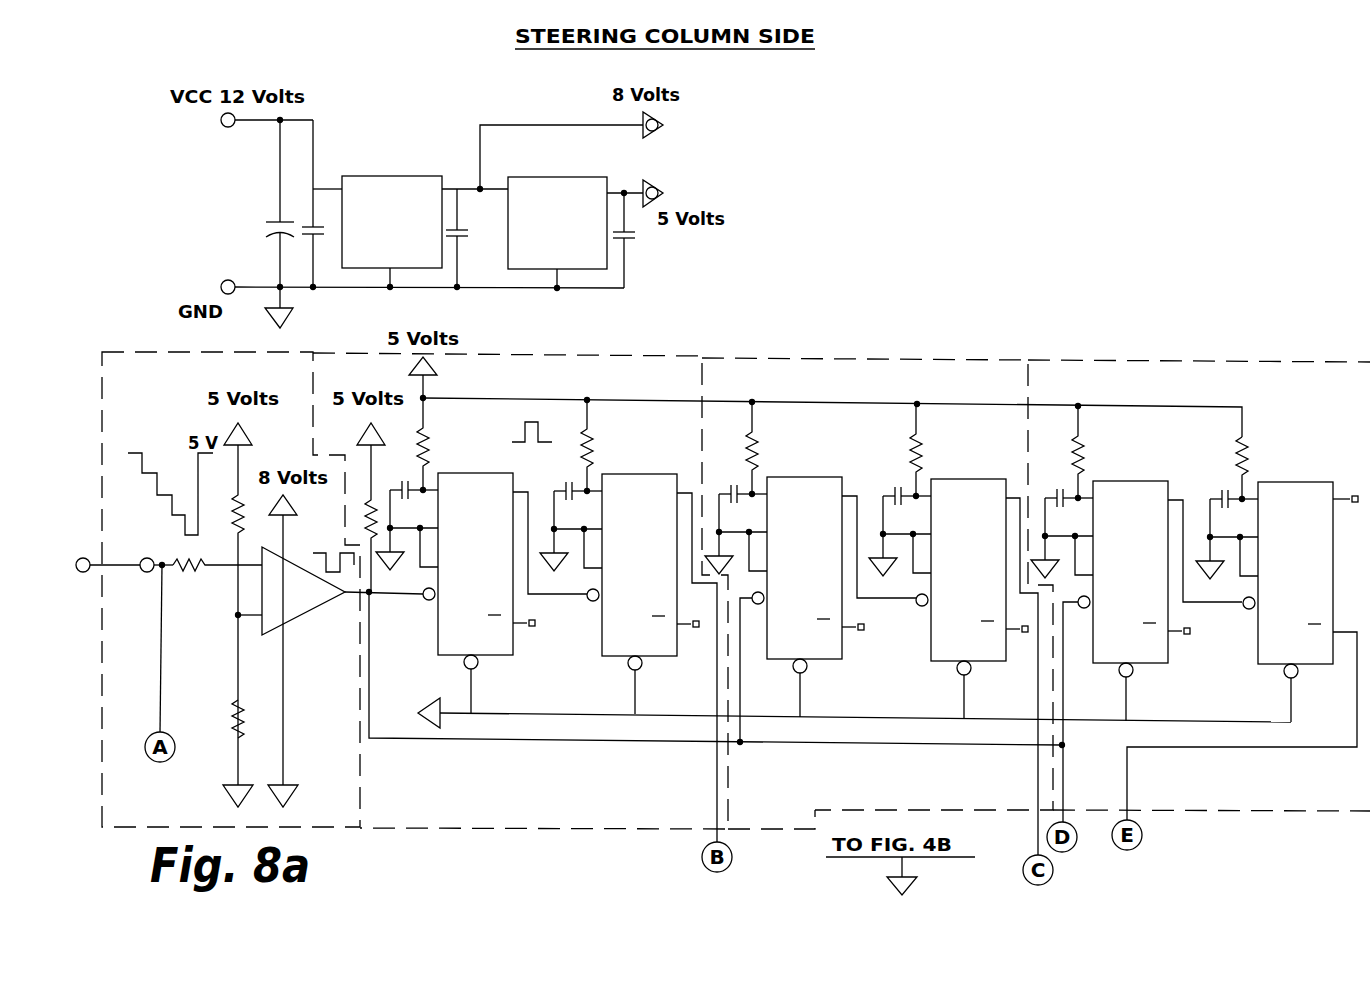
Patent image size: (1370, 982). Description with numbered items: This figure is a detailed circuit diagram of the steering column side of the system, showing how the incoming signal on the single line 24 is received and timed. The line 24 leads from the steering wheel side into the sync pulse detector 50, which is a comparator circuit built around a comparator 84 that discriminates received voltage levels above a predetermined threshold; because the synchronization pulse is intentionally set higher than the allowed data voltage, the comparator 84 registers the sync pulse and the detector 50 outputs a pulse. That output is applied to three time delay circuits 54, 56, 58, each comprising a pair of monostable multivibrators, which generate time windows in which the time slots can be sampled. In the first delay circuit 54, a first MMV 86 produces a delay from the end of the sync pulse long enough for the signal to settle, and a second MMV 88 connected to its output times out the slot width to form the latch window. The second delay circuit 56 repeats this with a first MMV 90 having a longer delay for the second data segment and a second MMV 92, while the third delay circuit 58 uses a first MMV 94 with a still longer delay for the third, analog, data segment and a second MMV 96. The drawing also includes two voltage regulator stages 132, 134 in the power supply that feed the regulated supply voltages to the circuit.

The single line 24 is at (96, 562).
The sync pulse detector 50 is at (153, 350).
The time delay circuit 54 is at (580, 338).
The time delay circuit 56 is at (773, 358).
The time delay circuit 58 is at (1155, 362).
The comparator 84 is at (303, 598).
The monostable multivibrator 86 is at (481, 555).
The second monostable multivibrator 88 is at (628, 620).
The monostable multivibrator 90 is at (810, 572).
The second monostable multivibrator 92 is at (953, 629).
The monostable multivibrator 94 is at (1136, 614).
The second monostable multivibrator 96 is at (1242, 625).
The 8 volt regulator 132 is at (350, 176).
The 5 volt regulator 134 is at (540, 177).